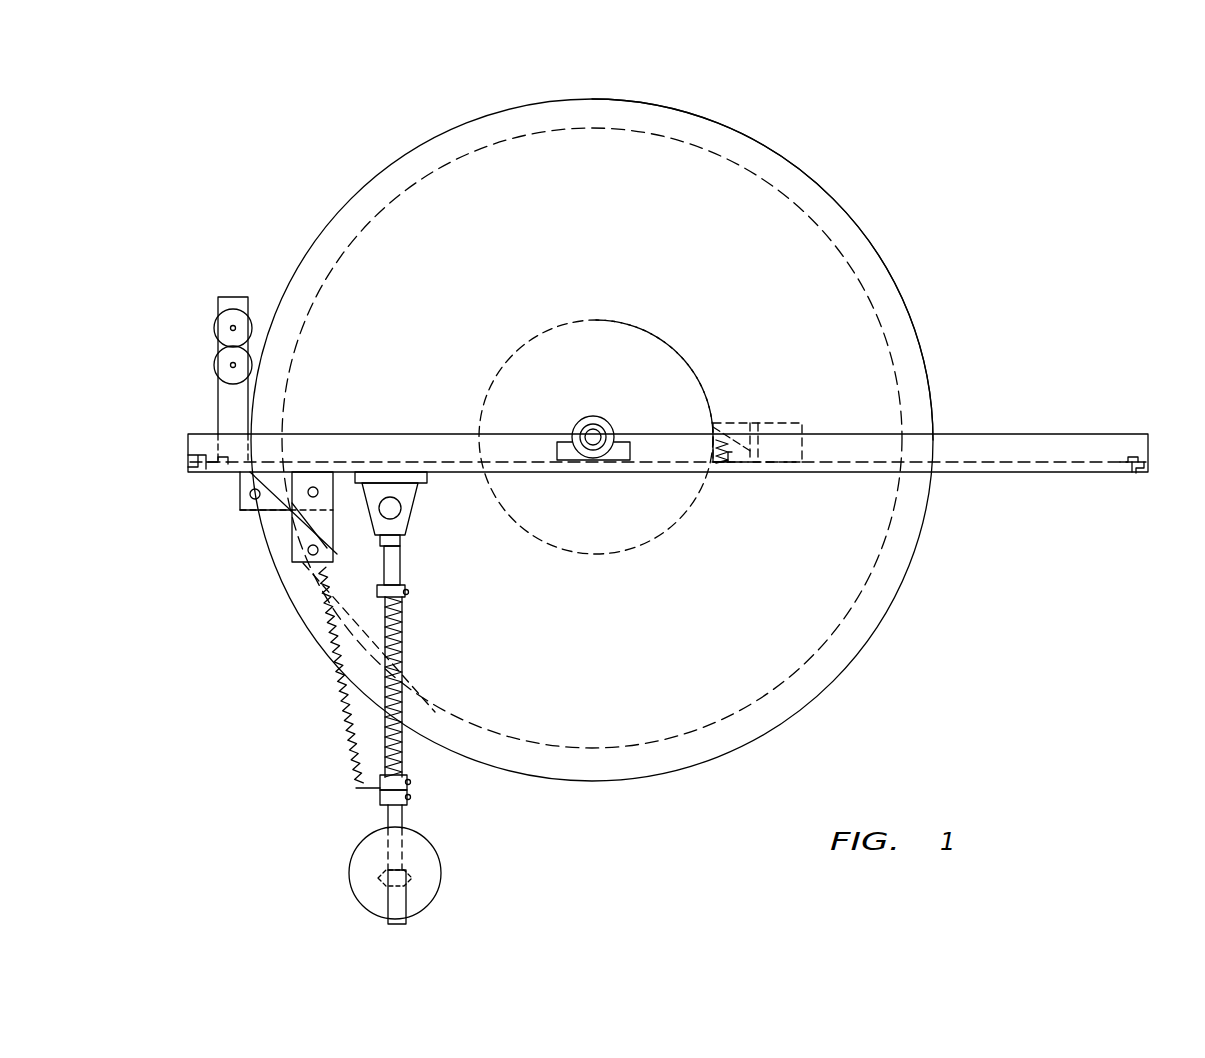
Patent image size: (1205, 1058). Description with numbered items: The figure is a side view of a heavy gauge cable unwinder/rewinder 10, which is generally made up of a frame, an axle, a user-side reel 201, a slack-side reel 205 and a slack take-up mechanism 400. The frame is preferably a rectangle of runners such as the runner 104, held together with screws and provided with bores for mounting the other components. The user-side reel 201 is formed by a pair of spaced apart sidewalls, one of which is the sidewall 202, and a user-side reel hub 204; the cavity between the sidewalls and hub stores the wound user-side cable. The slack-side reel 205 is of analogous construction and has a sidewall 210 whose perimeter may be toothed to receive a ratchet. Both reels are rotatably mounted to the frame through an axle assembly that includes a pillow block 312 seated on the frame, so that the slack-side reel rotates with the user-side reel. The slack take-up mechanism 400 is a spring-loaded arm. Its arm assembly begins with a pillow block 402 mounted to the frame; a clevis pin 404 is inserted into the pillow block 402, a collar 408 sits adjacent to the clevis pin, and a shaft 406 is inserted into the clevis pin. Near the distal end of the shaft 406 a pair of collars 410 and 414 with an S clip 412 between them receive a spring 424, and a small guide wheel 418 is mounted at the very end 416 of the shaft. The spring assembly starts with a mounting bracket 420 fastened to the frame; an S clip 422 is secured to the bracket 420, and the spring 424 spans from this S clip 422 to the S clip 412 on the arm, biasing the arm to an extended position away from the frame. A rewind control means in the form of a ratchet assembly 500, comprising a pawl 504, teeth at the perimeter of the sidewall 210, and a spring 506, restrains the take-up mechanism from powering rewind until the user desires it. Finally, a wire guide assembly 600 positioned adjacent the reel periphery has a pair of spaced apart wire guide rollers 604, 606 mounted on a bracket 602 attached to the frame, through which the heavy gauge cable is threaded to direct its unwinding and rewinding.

The unwinder/rewinder 10 is at (371, 132).
The runner 104 is at (1115, 426).
The user-side reel 201 is at (668, 156).
The sidewall 202 is at (893, 261).
The user-side reel hub 204 is at (880, 327).
The slack-side reel 205 is at (597, 322).
The sidewall 210 is at (683, 325).
The pillow block 312 is at (593, 416).
The slack take-up mechanism 400 is at (292, 736).
The pillow block 402 is at (408, 508).
The clevis pin 404 is at (408, 568).
The shaft 406 is at (410, 650).
The collar 408 is at (408, 593).
The collar 410 is at (410, 783).
The S clip 412 is at (368, 796).
The collar 414 is at (410, 798).
The shaft end 416 is at (408, 847).
The guide wheel 418 is at (444, 896).
The mounting bracket 420 is at (248, 500).
The S clip 422 is at (298, 540).
The spring 424 is at (315, 687).
The ratchet assembly 500 is at (782, 424).
The pawl 504 is at (722, 428).
The spring 506 is at (728, 465).
The wire guide assembly 600 is at (198, 315).
The bracket 602 is at (218, 410).
The wire guide roller 604 is at (237, 300).
The wire guide roller 606 is at (215, 366).